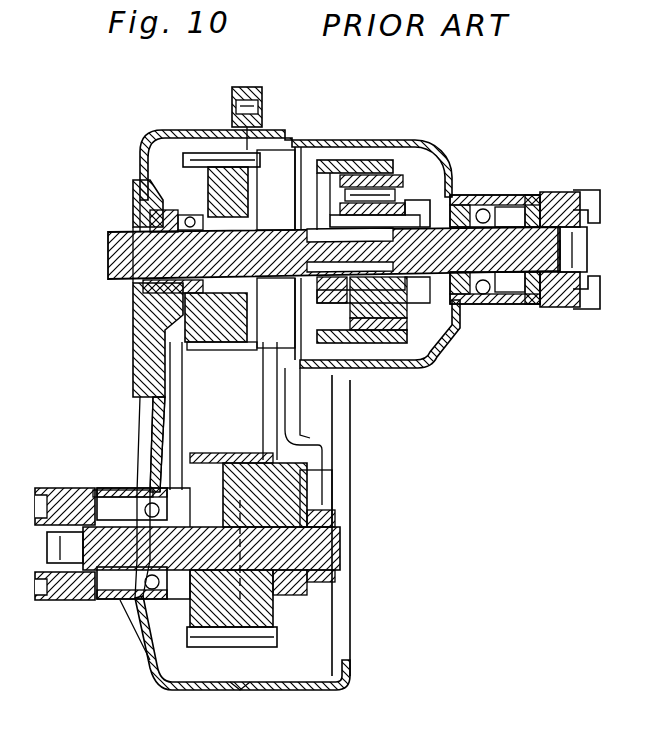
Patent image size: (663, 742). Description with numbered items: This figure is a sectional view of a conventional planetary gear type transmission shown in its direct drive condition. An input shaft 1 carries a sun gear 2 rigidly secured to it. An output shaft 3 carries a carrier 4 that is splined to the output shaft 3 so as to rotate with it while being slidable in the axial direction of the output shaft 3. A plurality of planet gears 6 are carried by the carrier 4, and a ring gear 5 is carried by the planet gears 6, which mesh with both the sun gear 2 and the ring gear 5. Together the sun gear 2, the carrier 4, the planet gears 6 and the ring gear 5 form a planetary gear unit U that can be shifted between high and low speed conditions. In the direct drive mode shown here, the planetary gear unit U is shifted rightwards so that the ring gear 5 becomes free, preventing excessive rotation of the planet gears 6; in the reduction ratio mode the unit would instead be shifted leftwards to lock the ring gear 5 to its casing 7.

The input shaft 1 is at (108, 258).
The sun gear 2 is at (430, 215).
The output shaft 3 is at (545, 212).
The carrier 4 is at (470, 198).
The ring gear 5 is at (383, 160).
The planet gears 6 is at (393, 182).
The casing 7 is at (297, 150).
The planetary gear unit U is at (363, 160).